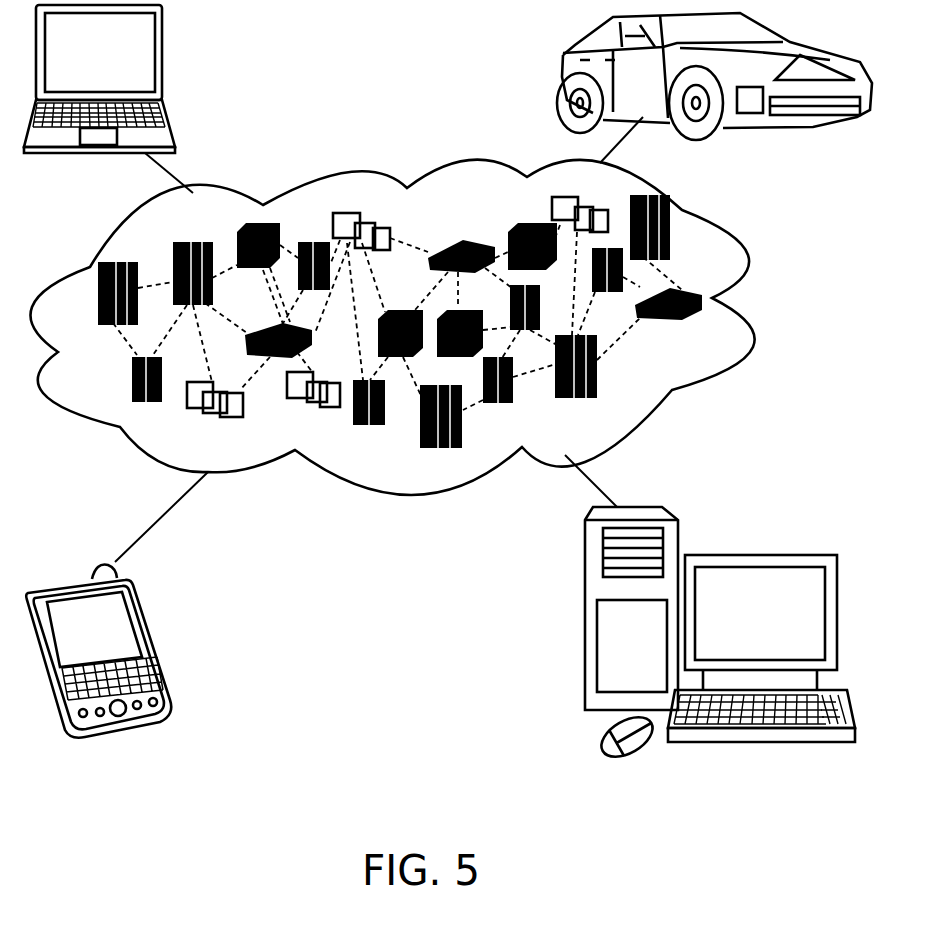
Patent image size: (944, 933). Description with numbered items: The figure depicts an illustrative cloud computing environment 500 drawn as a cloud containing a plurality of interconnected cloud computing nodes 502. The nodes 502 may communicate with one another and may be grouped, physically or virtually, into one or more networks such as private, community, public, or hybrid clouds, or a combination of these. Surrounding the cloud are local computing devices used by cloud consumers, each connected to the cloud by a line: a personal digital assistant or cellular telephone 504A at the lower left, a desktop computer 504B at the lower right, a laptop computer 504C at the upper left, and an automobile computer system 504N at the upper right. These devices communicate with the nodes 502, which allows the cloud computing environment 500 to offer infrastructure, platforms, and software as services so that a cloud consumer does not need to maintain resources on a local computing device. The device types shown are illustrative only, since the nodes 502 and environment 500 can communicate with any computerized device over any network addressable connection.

The cloud computing environment 500 is at (737, 285).
The cloud computing nodes 502 is at (710, 330).
The personal digital assistant (PDA) or cellular telephone 504A is at (140, 605).
The desktop computer 504B is at (747, 555).
The laptop computer 504C is at (163, 33).
The automobile computer system 504N is at (565, 82).